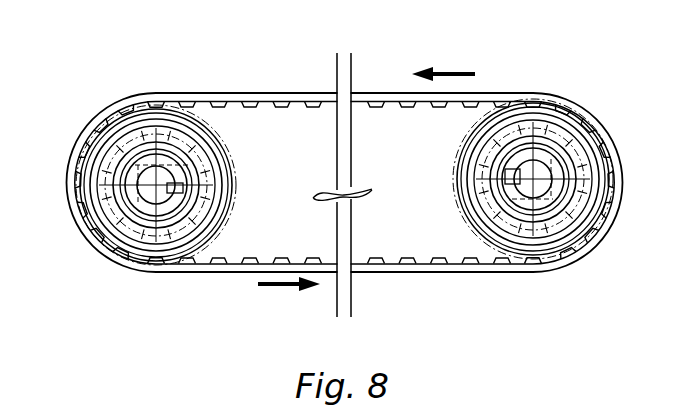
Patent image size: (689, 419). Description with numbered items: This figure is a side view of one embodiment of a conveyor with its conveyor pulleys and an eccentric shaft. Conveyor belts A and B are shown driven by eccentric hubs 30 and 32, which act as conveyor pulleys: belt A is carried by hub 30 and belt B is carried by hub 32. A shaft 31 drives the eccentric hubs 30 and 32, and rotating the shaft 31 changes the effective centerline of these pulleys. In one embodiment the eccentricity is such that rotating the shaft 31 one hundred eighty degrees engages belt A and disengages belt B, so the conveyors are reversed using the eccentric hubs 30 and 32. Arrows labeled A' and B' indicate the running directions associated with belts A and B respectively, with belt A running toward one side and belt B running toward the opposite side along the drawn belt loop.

The eccentric hub 30 is at (85, 105).
The shaft 31 is at (141, 214).
The eccentric hub 32 is at (548, 148).
The conveyor belt A is at (260, 311).
The belt run direction A' is at (269, 319).
The conveyor belt B is at (429, 53).
The belt run direction B' is at (457, 41).